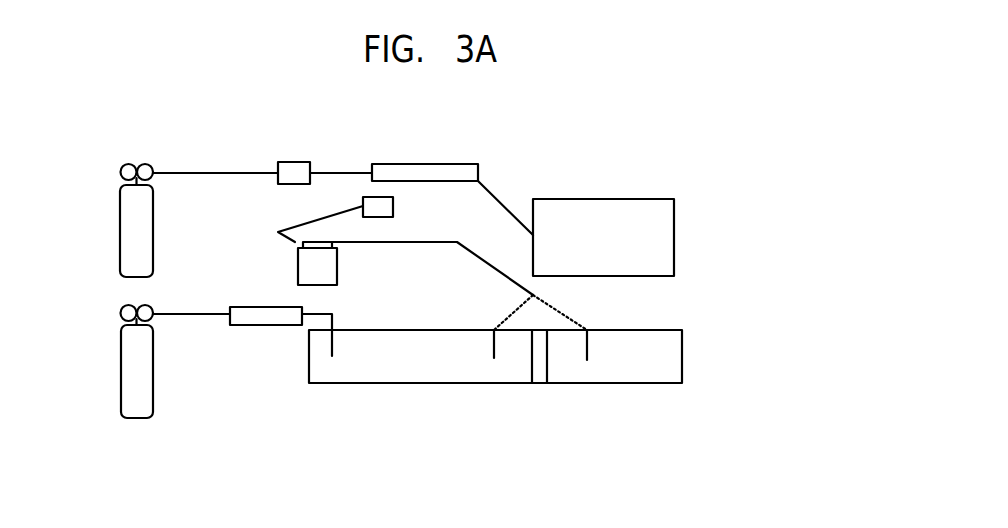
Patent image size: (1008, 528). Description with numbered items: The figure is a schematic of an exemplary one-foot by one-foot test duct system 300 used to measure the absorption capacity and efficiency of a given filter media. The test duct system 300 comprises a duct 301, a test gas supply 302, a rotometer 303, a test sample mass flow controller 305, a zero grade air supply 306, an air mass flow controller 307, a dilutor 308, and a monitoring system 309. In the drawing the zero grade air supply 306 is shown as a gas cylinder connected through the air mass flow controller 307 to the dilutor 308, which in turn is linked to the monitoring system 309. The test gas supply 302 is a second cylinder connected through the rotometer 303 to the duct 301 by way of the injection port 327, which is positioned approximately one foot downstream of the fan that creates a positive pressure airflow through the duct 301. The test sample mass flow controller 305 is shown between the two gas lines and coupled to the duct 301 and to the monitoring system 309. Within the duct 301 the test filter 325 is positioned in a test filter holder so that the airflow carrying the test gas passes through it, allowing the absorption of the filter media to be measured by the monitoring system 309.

The test duct system 300 is at (708, 182).
The duct 301 is at (650, 385).
The test gas supply 302 is at (120, 390).
The rotometer 303 is at (237, 327).
The test sample mass flow controller 305 is at (393, 207).
The zero grade air supply 306 is at (120, 215).
The air mass flow controller 307 is at (293, 162).
The dilutor 308 is at (445, 164).
The monitoring system 309 is at (674, 245).
The test filter 325 is at (540, 378).
The injection port 327 is at (340, 328).